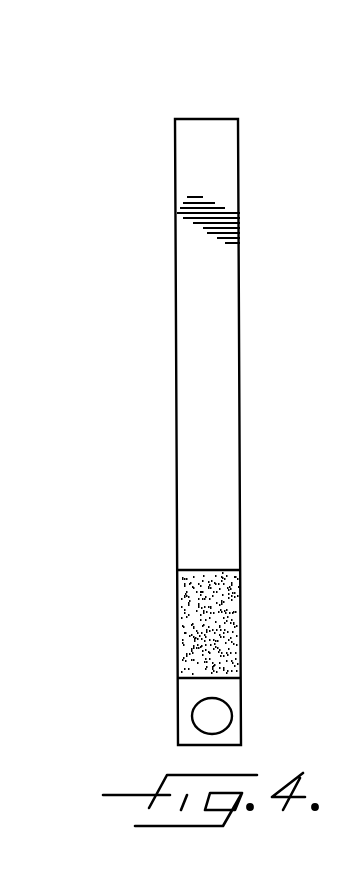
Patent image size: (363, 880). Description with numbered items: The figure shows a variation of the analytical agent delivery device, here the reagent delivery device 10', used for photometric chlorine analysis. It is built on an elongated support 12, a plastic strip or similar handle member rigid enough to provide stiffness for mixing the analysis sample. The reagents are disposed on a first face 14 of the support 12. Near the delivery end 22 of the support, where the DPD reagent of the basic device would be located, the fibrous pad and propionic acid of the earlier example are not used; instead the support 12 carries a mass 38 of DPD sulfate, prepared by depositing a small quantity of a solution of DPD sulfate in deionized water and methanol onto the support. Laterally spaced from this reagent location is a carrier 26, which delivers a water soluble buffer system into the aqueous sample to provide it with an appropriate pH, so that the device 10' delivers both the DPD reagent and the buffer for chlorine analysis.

The reagent delivery device 10' is at (206, 418).
The support 12 is at (242, 180).
The first face 14 is at (200, 237).
The carrier 26 is at (227, 590).
The delivery end 22 is at (220, 685).
The mass of DPD sulfate 38 is at (213, 720).